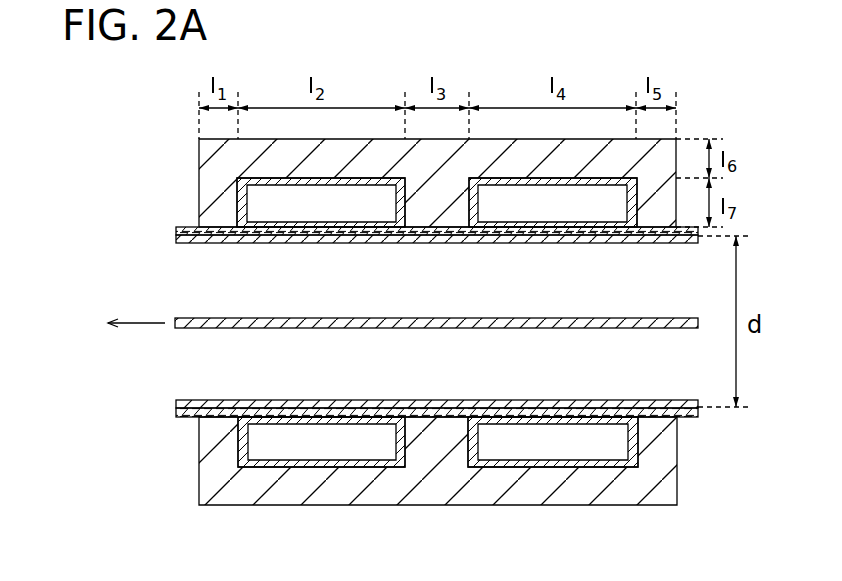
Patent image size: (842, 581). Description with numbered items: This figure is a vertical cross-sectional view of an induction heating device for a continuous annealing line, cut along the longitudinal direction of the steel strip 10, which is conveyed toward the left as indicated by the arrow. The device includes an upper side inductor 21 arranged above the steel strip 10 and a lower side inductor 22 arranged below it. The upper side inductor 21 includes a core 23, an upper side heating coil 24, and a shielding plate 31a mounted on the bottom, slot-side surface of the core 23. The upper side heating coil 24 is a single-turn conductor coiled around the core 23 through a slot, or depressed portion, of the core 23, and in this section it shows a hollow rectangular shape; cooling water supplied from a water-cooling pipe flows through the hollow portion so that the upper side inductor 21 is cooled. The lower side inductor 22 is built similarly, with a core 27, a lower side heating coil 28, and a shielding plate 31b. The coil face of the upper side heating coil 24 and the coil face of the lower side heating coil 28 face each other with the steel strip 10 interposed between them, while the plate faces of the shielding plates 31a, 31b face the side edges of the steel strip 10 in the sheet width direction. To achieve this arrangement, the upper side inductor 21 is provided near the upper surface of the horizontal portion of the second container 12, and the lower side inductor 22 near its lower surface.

The steel strip 10 is at (404, 318).
The second container 12 is at (188, 245).
The upper side inductor 21 is at (160, 188).
The lower side inductor 22 is at (162, 453).
The core 23 is at (213, 163).
The upper side heating coil 24 is at (243, 220).
The core 27 is at (213, 480).
The lower side heating coil 28 is at (240, 425).
The shielding plate 31a is at (193, 229).
The shielding plate 31b is at (193, 417).